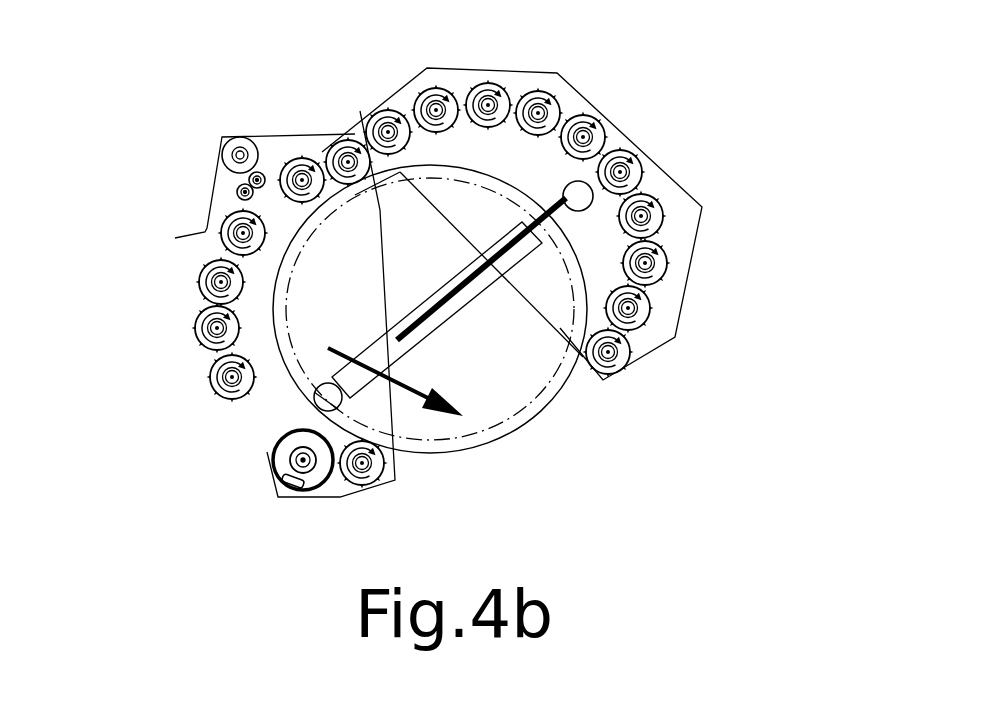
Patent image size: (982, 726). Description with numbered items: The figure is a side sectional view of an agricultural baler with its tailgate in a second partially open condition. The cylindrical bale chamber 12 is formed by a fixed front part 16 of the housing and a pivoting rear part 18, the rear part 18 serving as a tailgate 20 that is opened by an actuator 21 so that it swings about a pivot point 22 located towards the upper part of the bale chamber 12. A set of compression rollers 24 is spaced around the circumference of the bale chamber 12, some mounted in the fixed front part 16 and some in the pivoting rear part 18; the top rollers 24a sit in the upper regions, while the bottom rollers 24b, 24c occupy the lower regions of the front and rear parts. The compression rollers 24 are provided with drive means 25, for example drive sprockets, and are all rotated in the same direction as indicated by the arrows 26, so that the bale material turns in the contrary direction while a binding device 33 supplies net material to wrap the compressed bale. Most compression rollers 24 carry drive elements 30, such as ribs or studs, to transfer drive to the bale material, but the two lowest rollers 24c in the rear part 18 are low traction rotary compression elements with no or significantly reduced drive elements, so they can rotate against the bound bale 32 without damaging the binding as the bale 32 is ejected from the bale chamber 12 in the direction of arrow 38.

The bale chamber 12 is at (556, 367).
The front part 16 is at (210, 192).
The rear part 18 is at (530, 70).
The tailgate 20 is at (685, 187).
The linear actuator 21 is at (497, 240).
The pivot point 22 is at (348, 162).
The compression rollers 24 is at (600, 127).
The top rollers 24a is at (350, 150).
The bottom rollers 24b is at (390, 481).
The bottom rollers 24c is at (630, 357).
The drive means 25 is at (655, 263).
The arrows 26 is at (205, 377).
The drive elements 30 is at (232, 398).
The bale 32 is at (543, 410).
The binding device 33 is at (203, 146).
The arrow 38 is at (407, 382).